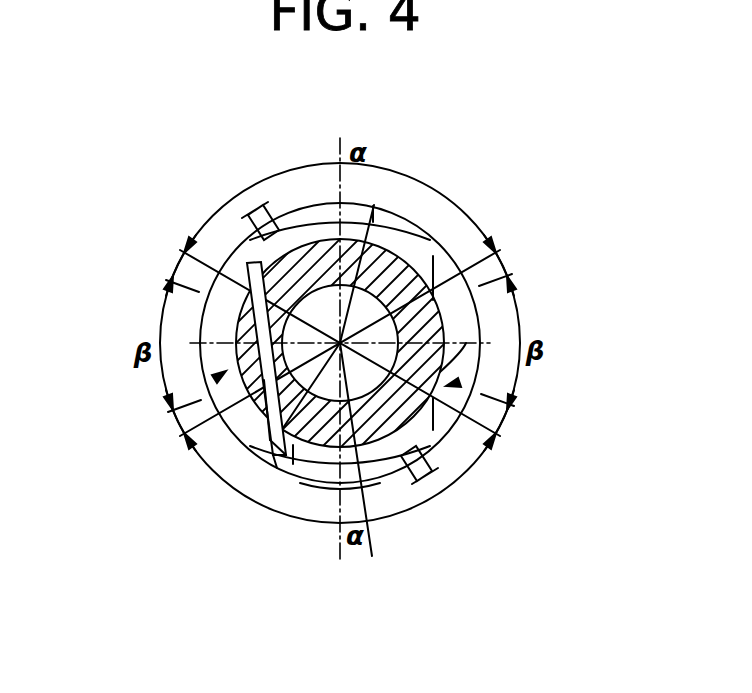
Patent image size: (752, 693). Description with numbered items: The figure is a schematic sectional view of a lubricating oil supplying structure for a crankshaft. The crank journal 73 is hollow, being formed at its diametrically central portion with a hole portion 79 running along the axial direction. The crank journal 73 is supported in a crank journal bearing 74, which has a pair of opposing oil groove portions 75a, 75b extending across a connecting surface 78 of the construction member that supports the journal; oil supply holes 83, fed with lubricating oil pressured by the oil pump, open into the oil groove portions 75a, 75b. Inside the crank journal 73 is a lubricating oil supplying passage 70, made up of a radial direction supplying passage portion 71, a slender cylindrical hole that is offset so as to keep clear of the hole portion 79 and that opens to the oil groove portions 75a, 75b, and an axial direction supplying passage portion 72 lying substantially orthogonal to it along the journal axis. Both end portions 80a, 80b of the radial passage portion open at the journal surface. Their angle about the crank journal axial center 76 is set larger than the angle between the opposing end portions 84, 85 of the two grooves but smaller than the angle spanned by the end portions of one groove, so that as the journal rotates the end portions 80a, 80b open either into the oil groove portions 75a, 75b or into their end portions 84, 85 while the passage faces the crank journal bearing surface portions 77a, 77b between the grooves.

The lubricating oil supplying passage 70 is at (250, 376).
The radial direction supplying passage portion 71 is at (278, 440).
The axial direction supplying passage portion 72 is at (255, 302).
The crank journal 73 is at (470, 402).
The crank journal bearing 74 is at (493, 318).
The oil groove portion 75a is at (300, 467).
The oil groove portion 75b is at (373, 222).
The crank journal axial center 76 is at (380, 472).
The crank journal bearing surface portion 77a is at (215, 378).
The crank journal bearing surface portion 77b is at (459, 383).
The connecting surface 78 is at (338, 486).
The hole portion 79 is at (447, 240).
The end portion of the radial direction supplying passage portion 80a is at (272, 466).
The end portion of the radial direction supplying passage portion 80b is at (251, 262).
The oil supply hole 83 is at (262, 204).
The end portion of the oil groove portion 84 is at (240, 255).
The end portion of the oil groove portion 85 is at (180, 437).